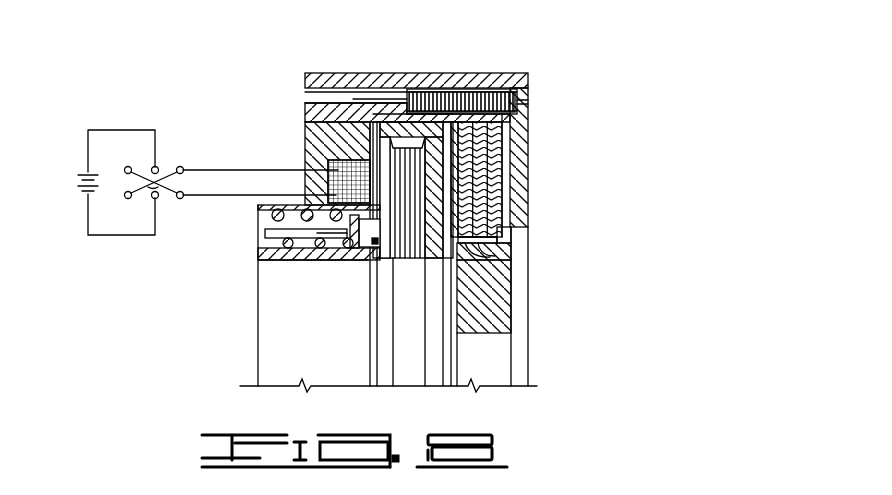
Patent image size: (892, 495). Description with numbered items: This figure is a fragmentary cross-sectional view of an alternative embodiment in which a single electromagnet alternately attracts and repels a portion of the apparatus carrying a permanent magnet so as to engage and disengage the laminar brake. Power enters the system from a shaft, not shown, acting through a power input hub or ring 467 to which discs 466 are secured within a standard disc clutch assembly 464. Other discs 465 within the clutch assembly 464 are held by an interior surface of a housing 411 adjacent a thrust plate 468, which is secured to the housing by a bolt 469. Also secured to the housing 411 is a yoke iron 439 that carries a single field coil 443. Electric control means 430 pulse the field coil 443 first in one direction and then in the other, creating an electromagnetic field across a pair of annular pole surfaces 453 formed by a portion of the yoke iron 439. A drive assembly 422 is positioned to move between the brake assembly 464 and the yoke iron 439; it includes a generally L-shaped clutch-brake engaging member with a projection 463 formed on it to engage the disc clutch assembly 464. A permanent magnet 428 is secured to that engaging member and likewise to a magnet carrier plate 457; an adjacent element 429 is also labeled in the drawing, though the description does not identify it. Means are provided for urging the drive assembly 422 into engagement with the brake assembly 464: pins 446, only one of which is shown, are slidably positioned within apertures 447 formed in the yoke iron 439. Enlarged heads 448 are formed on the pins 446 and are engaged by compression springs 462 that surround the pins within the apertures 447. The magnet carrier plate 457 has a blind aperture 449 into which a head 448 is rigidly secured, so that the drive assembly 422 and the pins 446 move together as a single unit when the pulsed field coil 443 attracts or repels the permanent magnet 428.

The housing 411 is at (318, 72).
The magnet carrier plate 457 is at (390, 105).
The permanent magnet 428 is at (425, 90).
The end wall 429 is at (434, 92).
The other discs 465 is at (497, 88).
The bolt 469 is at (530, 110).
The thrust plate 468 is at (524, 143).
The projection 463 is at (456, 182).
The disc clutch assembly 464 is at (505, 195).
The discs 466 is at (505, 252).
The power input hub or ring 467 is at (505, 322).
The electric control means 430 is at (168, 150).
The annular pole surfaces 453 is at (310, 97).
The yoke iron 439 is at (343, 140).
The field coil 443 is at (357, 178).
The apertures 447 is at (262, 212).
The pins 446 is at (262, 232).
The compression springs 462 is at (280, 258).
The enlarged heads 448 is at (368, 238).
The blind aperture 449 is at (372, 272).
The drive assembly 422 is at (410, 266).